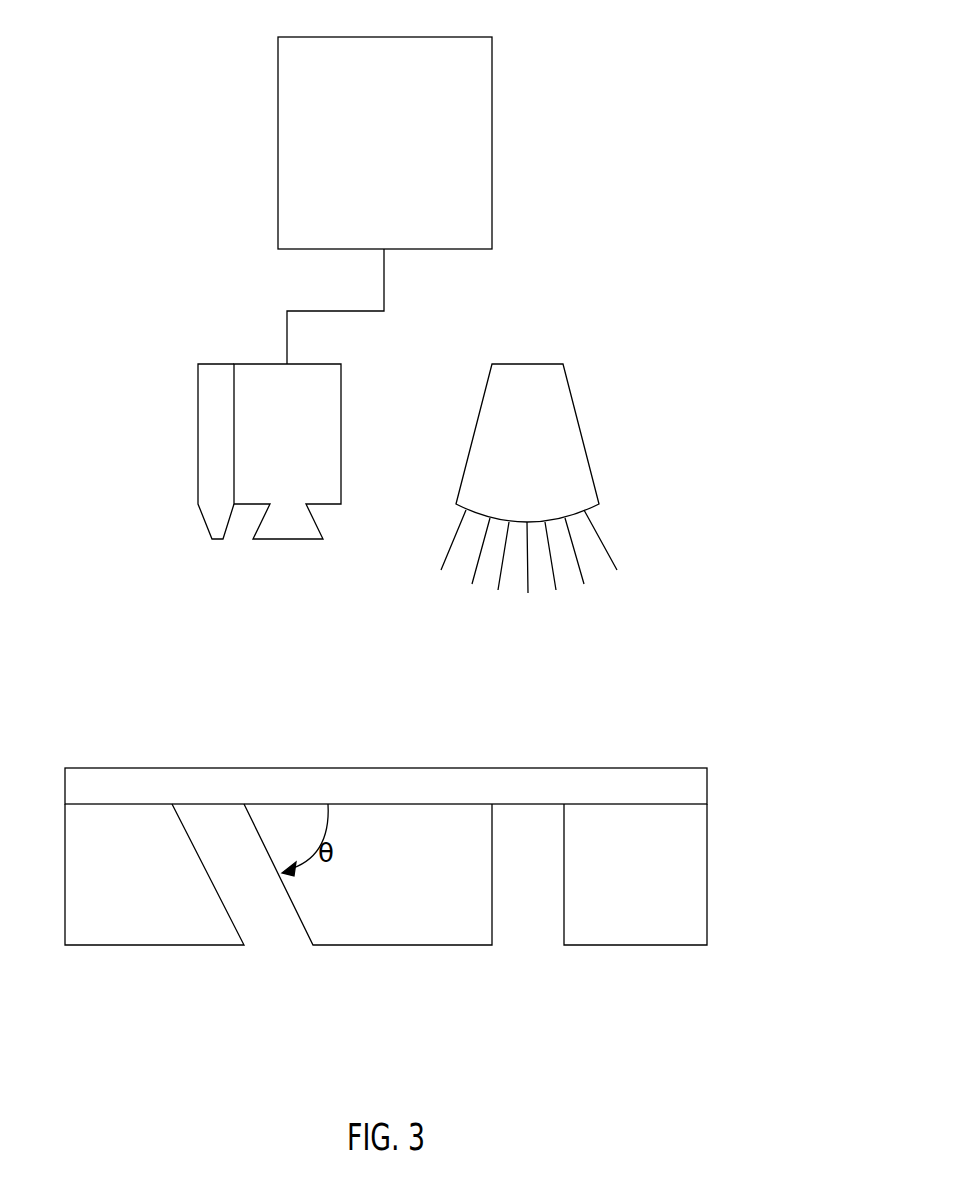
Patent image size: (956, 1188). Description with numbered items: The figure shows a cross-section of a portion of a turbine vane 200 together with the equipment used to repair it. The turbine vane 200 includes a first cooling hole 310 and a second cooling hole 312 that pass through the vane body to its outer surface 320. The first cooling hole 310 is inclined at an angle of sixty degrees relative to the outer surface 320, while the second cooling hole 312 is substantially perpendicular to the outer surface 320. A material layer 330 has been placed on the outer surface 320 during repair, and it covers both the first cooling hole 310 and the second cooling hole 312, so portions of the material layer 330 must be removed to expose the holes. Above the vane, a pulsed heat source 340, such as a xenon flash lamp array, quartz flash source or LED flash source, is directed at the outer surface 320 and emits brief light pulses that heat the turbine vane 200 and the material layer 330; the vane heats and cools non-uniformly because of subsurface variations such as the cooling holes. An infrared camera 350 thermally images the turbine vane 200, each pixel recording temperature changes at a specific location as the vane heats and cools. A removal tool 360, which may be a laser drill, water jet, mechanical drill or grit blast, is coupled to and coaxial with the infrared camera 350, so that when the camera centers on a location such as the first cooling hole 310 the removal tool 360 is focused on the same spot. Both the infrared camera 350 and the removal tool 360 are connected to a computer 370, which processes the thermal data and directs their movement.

The computer 370 is at (493, 142).
The infrared camera 350 is at (341, 385).
The removal tool 360 is at (197, 418).
The pulsed heat source 340 is at (583, 432).
The material layer 330 is at (127, 769).
The outer surface 320 is at (633, 804).
The first cooling hole 310 is at (275, 952).
The second cooling hole 312 is at (532, 952).
The turbine vane 200 is at (440, 845).